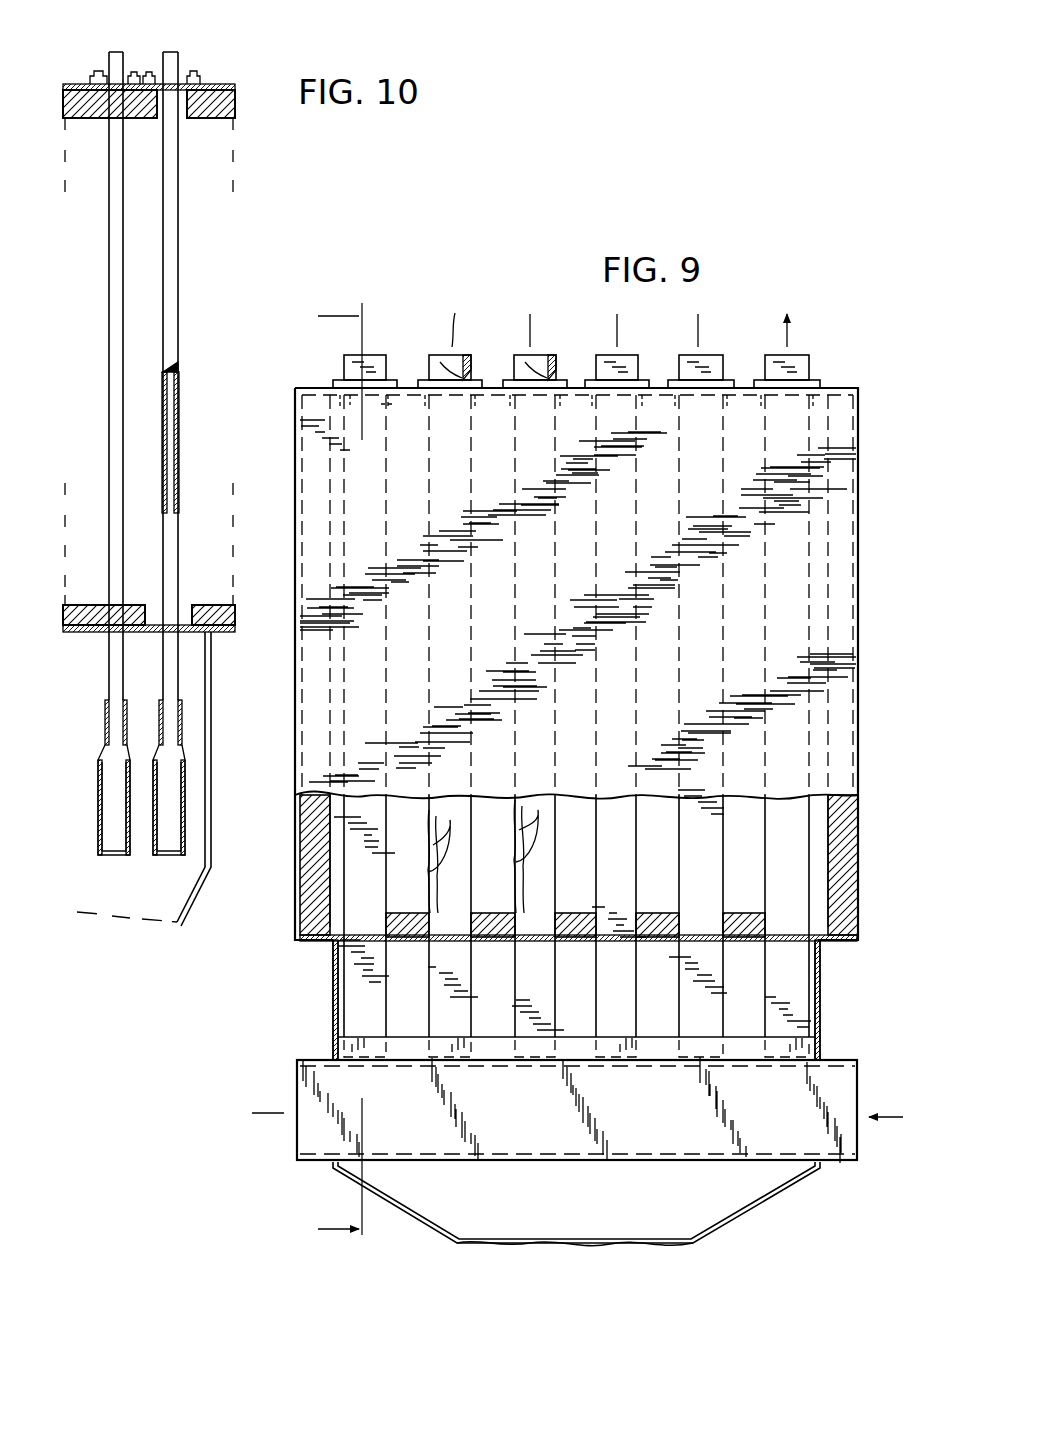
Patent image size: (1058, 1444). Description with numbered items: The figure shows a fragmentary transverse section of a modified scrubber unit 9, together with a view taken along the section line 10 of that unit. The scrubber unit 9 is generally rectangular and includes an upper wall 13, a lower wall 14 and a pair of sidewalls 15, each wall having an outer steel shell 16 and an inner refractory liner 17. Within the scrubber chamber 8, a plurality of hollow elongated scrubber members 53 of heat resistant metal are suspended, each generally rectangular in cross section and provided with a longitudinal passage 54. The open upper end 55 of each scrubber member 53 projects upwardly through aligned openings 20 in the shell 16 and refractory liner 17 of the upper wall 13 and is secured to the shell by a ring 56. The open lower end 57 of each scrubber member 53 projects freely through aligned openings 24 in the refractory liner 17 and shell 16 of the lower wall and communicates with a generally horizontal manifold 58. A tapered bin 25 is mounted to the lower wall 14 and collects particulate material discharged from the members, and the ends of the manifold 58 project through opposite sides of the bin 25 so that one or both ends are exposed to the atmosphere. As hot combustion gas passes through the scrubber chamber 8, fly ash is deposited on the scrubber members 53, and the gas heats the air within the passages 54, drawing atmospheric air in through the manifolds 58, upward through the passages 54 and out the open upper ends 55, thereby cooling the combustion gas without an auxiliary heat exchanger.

In FIG. 9, the scrubber chamber 8 is at (820, 822).
In FIG. 9, the scrubber unit 9 is at (858, 870).
In FIG. 9, the combustion chamber 10 is at (355, 774).
In FIG. 9, the upper wall 13 is at (834, 384).
In FIG. 10, the lower wall 14 is at (70, 640).
In FIG. 9, the lower wall 14 is at (322, 946).
In FIG. 9, the sidewalls 15 is at (858, 622).
In FIG. 10, the outer steel shell 16 is at (222, 86).
In FIG. 9, the outer steel shell 16 is at (836, 942).
In FIG. 10, the refractory liner 17 is at (222, 98).
In FIG. 9, the refractory liner 17 is at (840, 896).
In FIG. 10, the openings 20 is at (176, 118).
In FIG. 10, the openings 24 is at (192, 610).
In FIG. 10, the bin 25 is at (196, 898).
In FIG. 9, the bin 25 is at (740, 1210).
In FIG. 10, the scrubber members 53 is at (108, 338).
In FIG. 9, the scrubber members 53 is at (352, 872).
In FIG. 10, the longitudinal passage 54 is at (174, 414).
In FIG. 9, the longitudinal passage 54 is at (432, 850).
In FIG. 9, the open upper end 55 is at (442, 360).
In FIG. 10, the ring 56 is at (92, 82).
In FIG. 9, the ring 56 is at (334, 380).
In FIG. 10, the open lower end 57 is at (106, 742).
In FIG. 9, the open lower end 57 is at (438, 1018).
In FIG. 10, the manifolds 58 is at (98, 806).
In FIG. 9, the manifolds 58 is at (577, 1110).